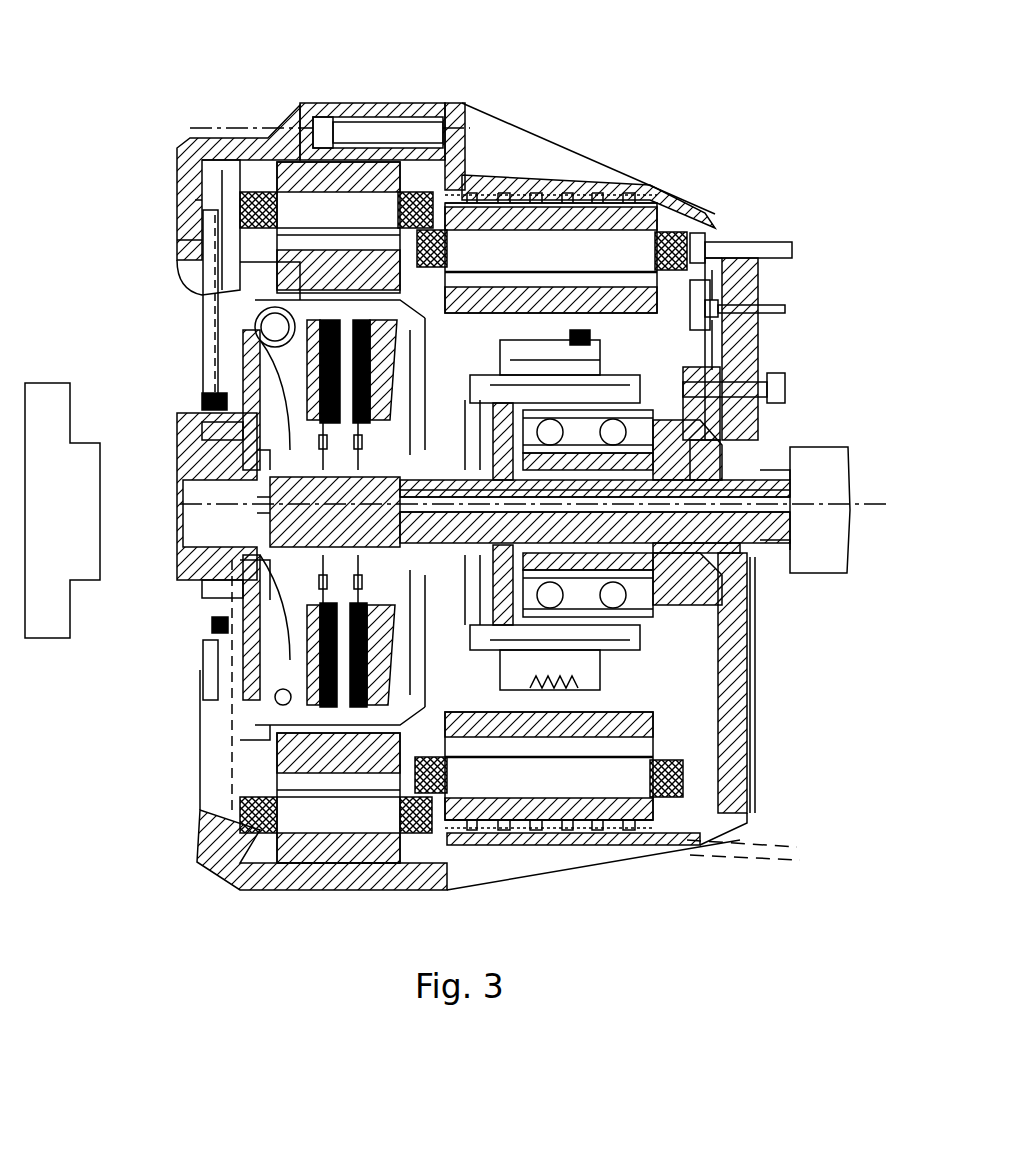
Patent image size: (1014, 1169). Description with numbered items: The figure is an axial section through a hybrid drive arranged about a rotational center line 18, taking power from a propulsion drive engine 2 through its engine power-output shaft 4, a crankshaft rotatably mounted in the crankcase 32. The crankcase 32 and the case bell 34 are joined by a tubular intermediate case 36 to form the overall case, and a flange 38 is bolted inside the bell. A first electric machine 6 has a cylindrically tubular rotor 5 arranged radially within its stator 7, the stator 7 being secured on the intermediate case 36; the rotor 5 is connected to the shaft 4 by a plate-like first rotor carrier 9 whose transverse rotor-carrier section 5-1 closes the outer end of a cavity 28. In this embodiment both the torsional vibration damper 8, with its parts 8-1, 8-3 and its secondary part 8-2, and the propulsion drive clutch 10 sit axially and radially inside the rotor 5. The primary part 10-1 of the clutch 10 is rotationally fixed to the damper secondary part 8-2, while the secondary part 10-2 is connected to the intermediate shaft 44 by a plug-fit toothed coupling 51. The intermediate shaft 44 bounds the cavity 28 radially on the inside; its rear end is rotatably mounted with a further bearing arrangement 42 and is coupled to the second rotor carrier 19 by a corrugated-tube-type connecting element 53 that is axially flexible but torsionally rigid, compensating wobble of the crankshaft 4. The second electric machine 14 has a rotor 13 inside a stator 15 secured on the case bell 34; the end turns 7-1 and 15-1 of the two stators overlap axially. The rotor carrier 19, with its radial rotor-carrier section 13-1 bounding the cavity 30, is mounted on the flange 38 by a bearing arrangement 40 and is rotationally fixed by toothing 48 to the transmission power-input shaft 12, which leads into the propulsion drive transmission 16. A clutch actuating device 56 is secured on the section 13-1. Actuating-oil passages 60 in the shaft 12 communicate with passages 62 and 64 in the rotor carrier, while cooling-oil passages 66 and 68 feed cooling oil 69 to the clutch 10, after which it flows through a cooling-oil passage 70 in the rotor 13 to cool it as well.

The propulsion drive engine 2 is at (50, 638).
The engine power-output shaft 4 is at (200, 445).
The rotor of the first electric machine 5 is at (290, 257).
The rotor-carrier section 5-1 is at (202, 400).
The first electric machine 6 is at (352, 210).
The stator of the first electric machine 7 is at (300, 170).
The end turns 7-1 is at (420, 205).
The torsional vibration damper 8 is at (233, 703).
The clutch plate 8-1 is at (243, 312).
The secondary part of the torsional vibration damper 8-2 is at (250, 393).
The clutch ring 8-3 is at (255, 322).
The first rotor carrier 9 is at (237, 657).
The propulsion drive clutch 10 is at (388, 720).
The primary part of the clutch 10-1 is at (283, 292).
The secondary part of the clutch 10-2 is at (275, 563).
The transmission power-input shaft 12 is at (700, 470).
The rotor of the second electric machine 13 is at (750, 280).
The rotor-carrier section 13-1 is at (760, 310).
The second electric machine 14 is at (557, 248).
The stator of the second electric machine 15 is at (640, 195).
The end turns 15-1 is at (452, 253).
The propulsion drive transmission 16 is at (830, 575).
The rotational center line 18 is at (847, 510).
The second rotor carrier 19 is at (717, 653).
The cavity 28 is at (243, 357).
The cavity 30 is at (437, 690).
The crankcase 32 is at (200, 190).
The case bell 34 is at (700, 240).
The tubular intermediate case 36 is at (340, 103).
The flange 38 is at (785, 390).
The bearing arrangement 40 is at (760, 430).
The further bearing arrangement 42 is at (418, 572).
The intermediate shaft 44 is at (257, 500).
The toothing 48 is at (257, 513).
The plug-fit toothed coupling 51 is at (253, 458).
The connecting element 53 is at (455, 420).
The actuating device 56 is at (720, 320).
The actuating-oil passages 60 is at (777, 500).
The actuating-oil passages 62 is at (760, 342).
The actuating-oil passages 64 is at (725, 365).
The cooling-oil passage 66 is at (763, 543).
The cooling-oil passage 68 is at (492, 655).
The cooling oil 69 is at (636, 680).
The cooling-oil passage 70 is at (767, 847).